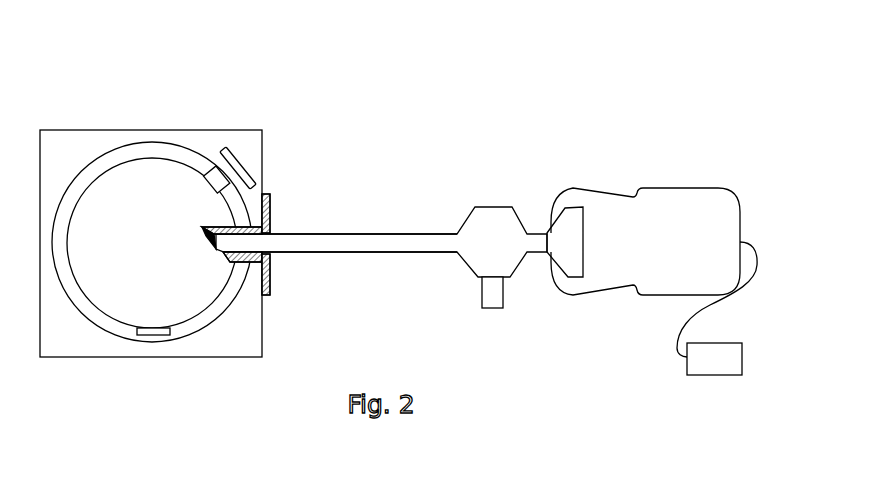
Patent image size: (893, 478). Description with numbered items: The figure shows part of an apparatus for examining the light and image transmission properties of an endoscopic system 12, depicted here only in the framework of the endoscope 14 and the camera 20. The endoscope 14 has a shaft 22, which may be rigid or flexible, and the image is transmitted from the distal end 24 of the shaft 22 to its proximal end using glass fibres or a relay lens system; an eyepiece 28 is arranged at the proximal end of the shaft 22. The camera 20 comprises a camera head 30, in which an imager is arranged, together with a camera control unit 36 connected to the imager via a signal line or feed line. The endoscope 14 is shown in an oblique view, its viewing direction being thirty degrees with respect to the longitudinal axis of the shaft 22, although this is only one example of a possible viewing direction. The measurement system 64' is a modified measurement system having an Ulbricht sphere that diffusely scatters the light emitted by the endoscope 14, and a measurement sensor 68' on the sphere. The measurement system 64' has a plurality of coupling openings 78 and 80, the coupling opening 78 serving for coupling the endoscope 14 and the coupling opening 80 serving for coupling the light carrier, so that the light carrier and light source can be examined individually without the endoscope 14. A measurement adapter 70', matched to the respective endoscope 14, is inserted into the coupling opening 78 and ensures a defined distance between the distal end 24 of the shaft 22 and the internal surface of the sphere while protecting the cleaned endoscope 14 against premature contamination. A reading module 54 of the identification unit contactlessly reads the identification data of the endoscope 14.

The endoscopic system 12 is at (486, 67).
The endoscope 14 is at (381, 225).
The camera 20 is at (717, 238).
The shaft 22 is at (329, 240).
The distal end 24 is at (212, 253).
The eyepiece 28 is at (570, 217).
The camera head 30 is at (650, 200).
The camera control unit 36 is at (725, 375).
The reading module 54 is at (100, 177).
The measurement system 64' is at (151, 206).
The measurement sensor 68' is at (137, 368).
The measurement adapter 70' is at (289, 256).
The coupling opening 78 is at (241, 226).
The coupling opening 80 is at (212, 172).